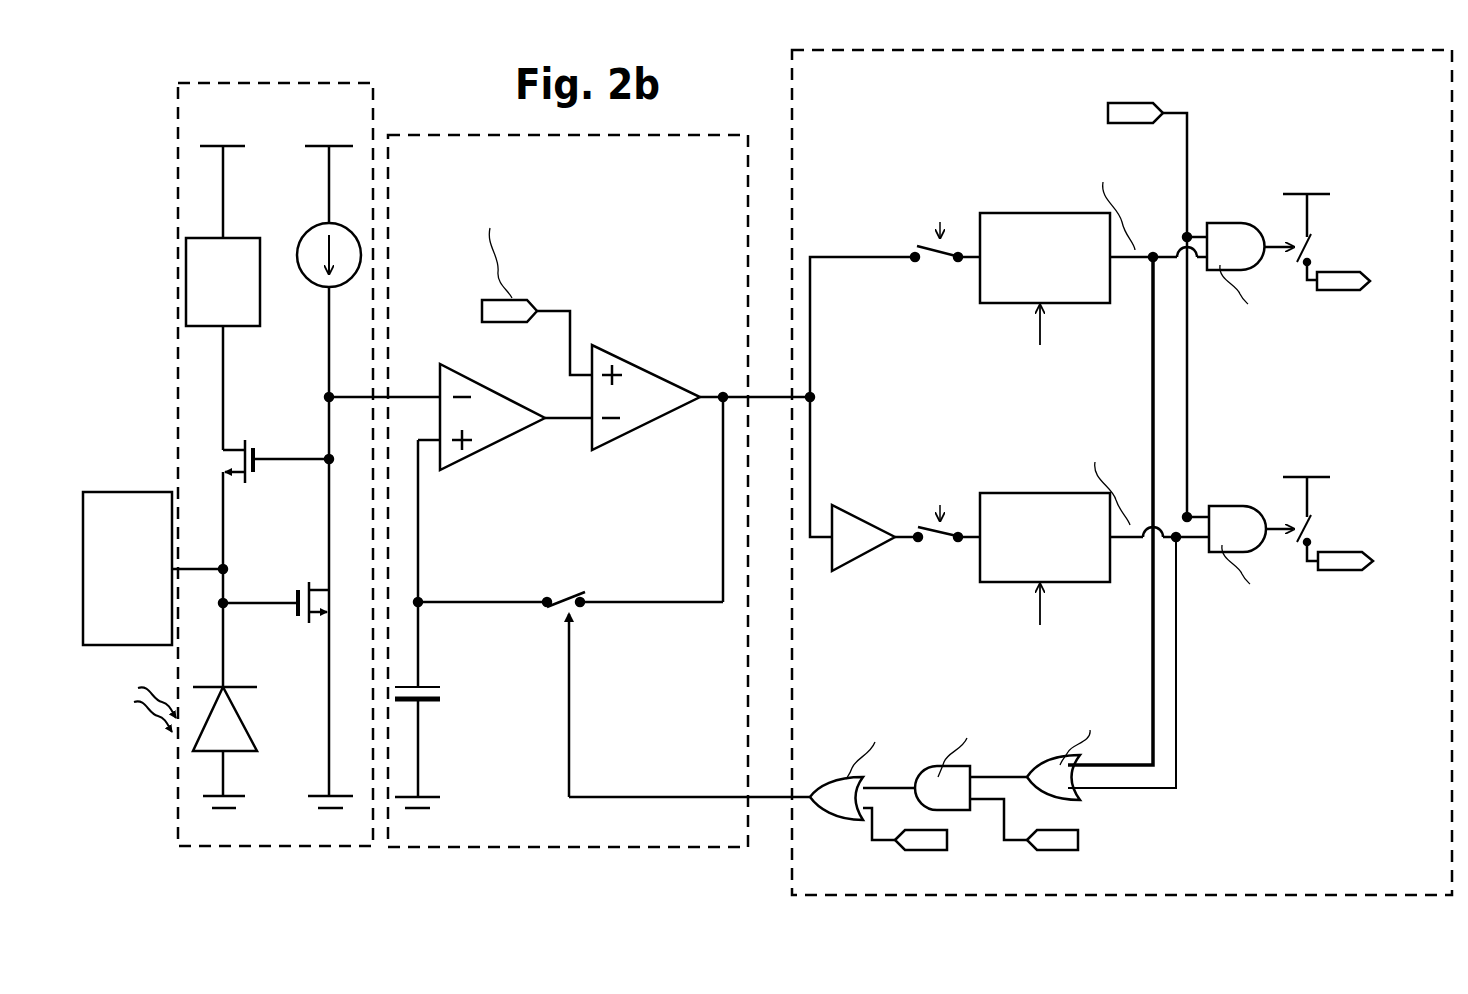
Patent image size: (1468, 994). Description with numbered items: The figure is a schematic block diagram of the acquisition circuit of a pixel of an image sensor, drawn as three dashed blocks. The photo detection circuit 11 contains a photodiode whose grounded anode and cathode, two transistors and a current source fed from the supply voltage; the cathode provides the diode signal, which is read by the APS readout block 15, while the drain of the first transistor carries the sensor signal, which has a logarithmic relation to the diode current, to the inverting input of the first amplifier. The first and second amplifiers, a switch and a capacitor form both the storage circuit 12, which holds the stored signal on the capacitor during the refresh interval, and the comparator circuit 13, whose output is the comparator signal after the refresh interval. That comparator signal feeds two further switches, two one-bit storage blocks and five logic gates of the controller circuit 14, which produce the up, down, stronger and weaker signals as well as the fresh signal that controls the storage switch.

The APS readout block 15 is at (128, 502).
The photo detection circuit 11 is at (265, 830).
The storage circuit 12 is at (470, 838).
The comparator circuit 13 is at (627, 544).
The controller circuit 14 is at (792, 883).